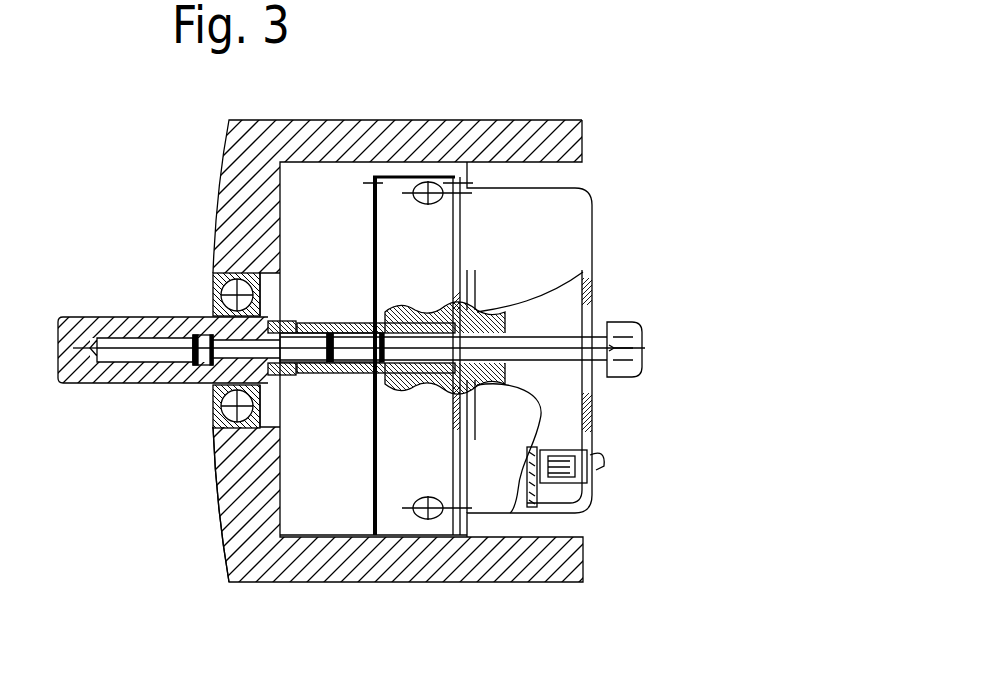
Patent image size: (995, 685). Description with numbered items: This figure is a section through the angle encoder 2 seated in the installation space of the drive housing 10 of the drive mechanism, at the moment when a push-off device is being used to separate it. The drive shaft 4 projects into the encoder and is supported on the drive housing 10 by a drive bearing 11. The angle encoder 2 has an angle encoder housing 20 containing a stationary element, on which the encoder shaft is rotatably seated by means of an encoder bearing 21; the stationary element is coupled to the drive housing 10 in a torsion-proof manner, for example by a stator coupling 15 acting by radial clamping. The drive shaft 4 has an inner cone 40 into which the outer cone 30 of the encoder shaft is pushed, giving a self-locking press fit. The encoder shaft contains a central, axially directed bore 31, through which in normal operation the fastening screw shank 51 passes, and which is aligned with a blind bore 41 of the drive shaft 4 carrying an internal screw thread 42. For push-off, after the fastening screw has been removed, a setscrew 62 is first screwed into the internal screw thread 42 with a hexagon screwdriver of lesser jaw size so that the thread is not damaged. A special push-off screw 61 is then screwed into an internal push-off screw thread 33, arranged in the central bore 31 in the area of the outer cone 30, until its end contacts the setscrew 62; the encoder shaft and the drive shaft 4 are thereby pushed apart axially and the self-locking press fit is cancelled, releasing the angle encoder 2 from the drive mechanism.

The angle encoder 2 is at (600, 186).
The drive shaft 4 is at (135, 377).
The drive housing 10 is at (398, 150).
The drive bearing 11 is at (214, 432).
The stator coupling 15 is at (401, 517).
The angle encoder housing 20 is at (590, 505).
The encoder bearing 21 is at (406, 306).
The outer cone 30 is at (348, 375).
The central, axially directed bore 31 is at (472, 318).
The internal push-off screw thread 33 is at (311, 378).
The inner cone 40 is at (320, 317).
The blind bore 41 is at (150, 338).
The internal screw thread 42 is at (200, 370).
The fastening screw shank 51 is at (418, 392).
The push-off screw 61 is at (616, 330).
The setscrew 62 is at (215, 272).